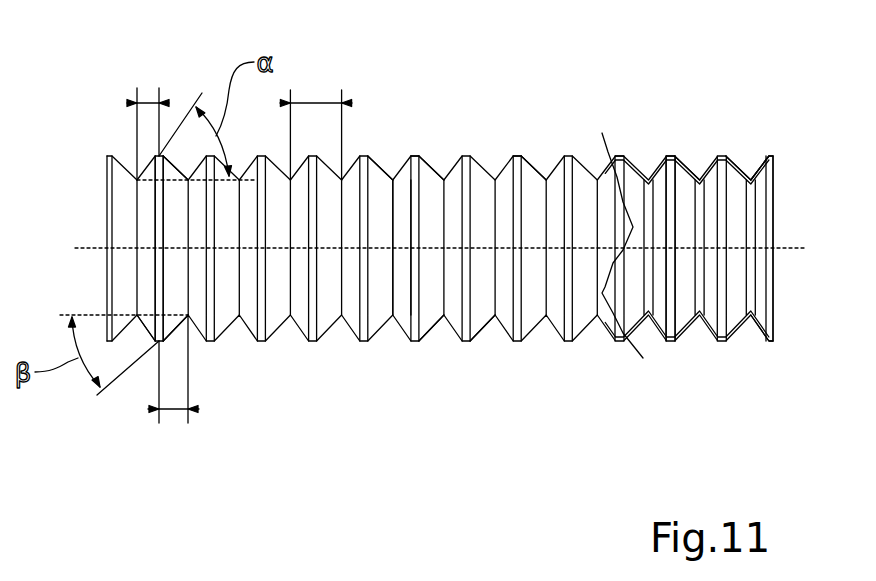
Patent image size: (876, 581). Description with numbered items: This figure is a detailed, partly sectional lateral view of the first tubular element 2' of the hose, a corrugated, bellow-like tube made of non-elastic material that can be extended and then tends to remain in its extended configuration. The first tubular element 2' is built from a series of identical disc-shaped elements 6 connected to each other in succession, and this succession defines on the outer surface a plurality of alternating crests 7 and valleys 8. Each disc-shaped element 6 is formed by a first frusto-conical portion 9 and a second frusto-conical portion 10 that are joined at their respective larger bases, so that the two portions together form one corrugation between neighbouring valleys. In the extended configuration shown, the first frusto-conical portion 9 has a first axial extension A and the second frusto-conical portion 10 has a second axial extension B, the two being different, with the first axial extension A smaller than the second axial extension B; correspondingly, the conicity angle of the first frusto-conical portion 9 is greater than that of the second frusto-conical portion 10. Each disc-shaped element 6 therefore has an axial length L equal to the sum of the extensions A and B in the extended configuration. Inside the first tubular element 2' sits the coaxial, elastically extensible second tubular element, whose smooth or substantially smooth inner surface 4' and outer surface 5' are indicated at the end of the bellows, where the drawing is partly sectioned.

The first tubular element 2' is at (791, 207).
The inner surface 4' is at (794, 183).
The outer surface 5' is at (401, 113).
The disc-shaped element 6 is at (417, 157).
The crest 7 is at (520, 152).
The valley 8 is at (542, 163).
The first frusto-conical portion 9 is at (150, 206).
The second frusto-conical portion 10 is at (687, 203).
The first axial extension A is at (151, 90).
The second axial extension B is at (170, 410).
The axial length L is at (317, 103).